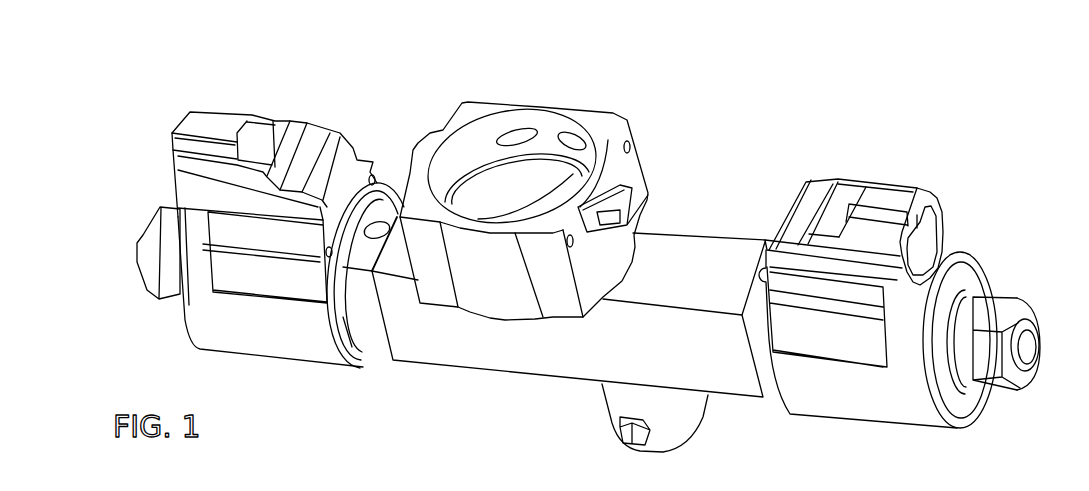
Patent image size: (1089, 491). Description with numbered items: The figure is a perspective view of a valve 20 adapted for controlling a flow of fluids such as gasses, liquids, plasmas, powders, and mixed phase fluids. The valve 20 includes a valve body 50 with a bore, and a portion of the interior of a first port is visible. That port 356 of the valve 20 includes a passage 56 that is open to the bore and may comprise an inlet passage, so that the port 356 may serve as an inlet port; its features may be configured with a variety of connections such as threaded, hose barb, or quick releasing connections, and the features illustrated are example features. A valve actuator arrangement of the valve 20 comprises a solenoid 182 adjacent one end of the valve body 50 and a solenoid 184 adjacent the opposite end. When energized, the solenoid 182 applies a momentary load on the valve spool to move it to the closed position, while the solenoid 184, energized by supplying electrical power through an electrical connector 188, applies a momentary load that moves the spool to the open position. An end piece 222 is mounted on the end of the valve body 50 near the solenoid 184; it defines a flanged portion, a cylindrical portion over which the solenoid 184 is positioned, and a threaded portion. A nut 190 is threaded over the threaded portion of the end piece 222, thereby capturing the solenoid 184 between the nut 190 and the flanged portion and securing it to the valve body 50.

The valve 20 is at (966, 55).
The valve body 50 is at (704, 231).
The passage 56 is at (524, 192).
The port 356 is at (487, 138).
The solenoid 182 is at (300, 362).
The solenoid 184 is at (911, 330).
The electrical connector 188 is at (928, 236).
The nut 190 is at (998, 387).
The end piece 222 is at (1031, 357).